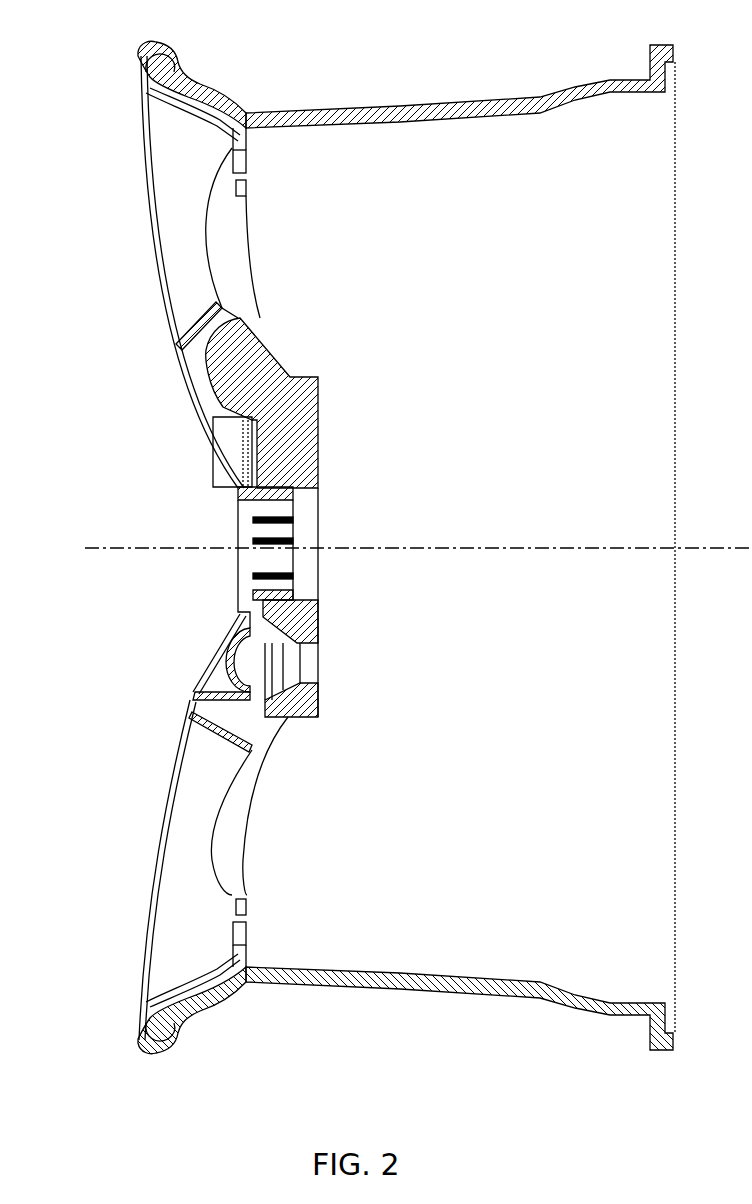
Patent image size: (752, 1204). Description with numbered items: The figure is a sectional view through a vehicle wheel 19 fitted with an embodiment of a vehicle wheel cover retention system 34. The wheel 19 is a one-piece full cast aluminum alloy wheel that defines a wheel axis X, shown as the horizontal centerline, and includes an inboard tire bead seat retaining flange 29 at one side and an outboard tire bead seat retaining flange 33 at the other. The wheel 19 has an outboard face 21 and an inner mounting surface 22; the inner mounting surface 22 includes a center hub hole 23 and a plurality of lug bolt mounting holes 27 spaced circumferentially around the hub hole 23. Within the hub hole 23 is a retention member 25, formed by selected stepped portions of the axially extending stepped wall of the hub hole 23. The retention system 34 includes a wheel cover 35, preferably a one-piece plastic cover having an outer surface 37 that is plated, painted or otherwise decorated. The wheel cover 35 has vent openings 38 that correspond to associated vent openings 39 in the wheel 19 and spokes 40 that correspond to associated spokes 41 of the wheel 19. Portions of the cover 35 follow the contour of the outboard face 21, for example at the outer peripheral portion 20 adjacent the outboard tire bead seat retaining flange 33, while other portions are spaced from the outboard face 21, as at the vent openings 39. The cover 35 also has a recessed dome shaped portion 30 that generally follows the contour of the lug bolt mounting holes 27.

The vehicle wheel 19 is at (363, 985).
The outer peripheral portion 20 is at (138, 50).
The outboard face 21 is at (245, 463).
The inner mounting surface 22 is at (323, 424).
The center hub hole 23 is at (315, 600).
The retention member 25 is at (299, 491).
The lug bolt mounting holes 27 is at (285, 702).
The inboard tire bead seat retaining flange 29 is at (652, 52).
The recessed dome shaped portion 30 is at (232, 668).
The outboard tire bead seat retaining flange 33 is at (176, 62).
The vehicle wheel cover retention system 34 is at (166, 515).
The wheel cover 35 is at (193, 694).
The outer surface 37 is at (200, 404).
The vent openings 38 is at (203, 320).
The vent openings 39 is at (250, 316).
The spokes 40 is at (150, 822).
The spokes 41 is at (245, 812).
The wheel axis X is at (455, 545).